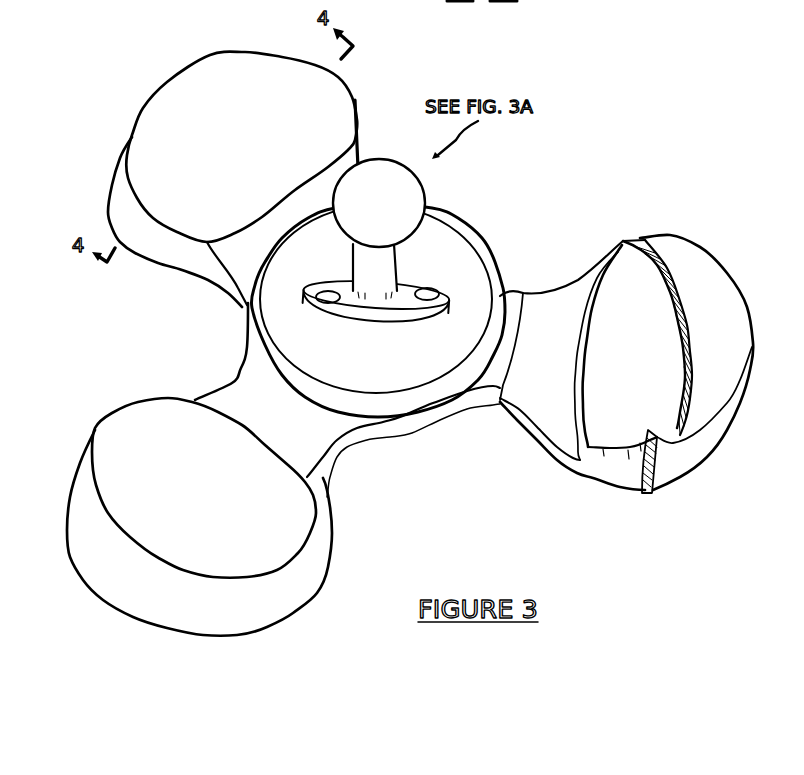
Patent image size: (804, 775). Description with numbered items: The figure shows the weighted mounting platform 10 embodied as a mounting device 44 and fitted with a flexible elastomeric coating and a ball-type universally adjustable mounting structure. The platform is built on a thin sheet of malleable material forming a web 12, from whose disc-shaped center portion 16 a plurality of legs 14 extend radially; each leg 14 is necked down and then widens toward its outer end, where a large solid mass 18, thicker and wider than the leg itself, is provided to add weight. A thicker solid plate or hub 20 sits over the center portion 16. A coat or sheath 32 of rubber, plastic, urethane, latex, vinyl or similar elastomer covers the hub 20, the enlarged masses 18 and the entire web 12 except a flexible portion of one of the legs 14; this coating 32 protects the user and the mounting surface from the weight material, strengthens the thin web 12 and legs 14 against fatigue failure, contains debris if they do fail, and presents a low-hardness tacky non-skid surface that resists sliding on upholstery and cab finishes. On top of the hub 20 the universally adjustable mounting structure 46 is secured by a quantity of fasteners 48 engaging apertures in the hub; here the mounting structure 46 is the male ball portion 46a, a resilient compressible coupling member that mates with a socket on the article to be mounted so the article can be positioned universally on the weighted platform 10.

The weighted mounting platform 10 is at (362, 372).
The web 12 is at (247, 335).
The legs 14 is at (541, 292).
The center portion 16 is at (407, 435).
The mass 18 is at (215, 135).
The hub 20 is at (467, 228).
The coating 32 is at (501, 407).
The mounting device 44 is at (606, 175).
The universally adjustable mounting structure 46 is at (452, 181).
The male ball portion 46a is at (364, 216).
The fasteners 48 is at (326, 291).